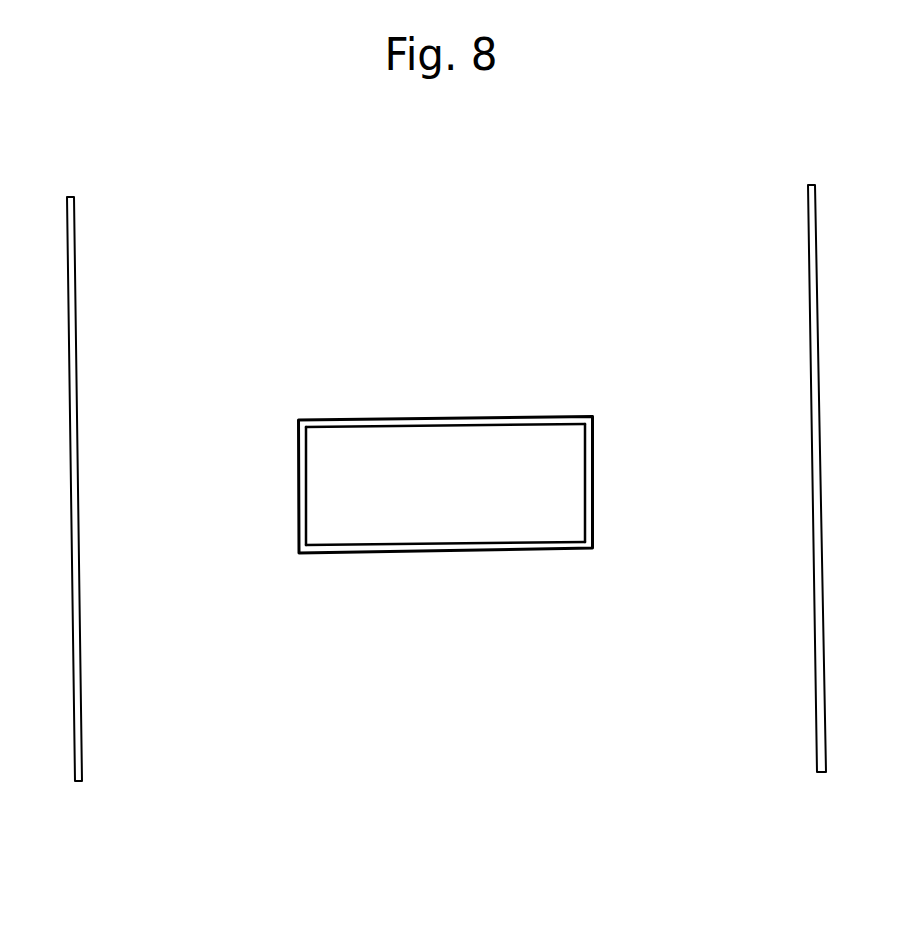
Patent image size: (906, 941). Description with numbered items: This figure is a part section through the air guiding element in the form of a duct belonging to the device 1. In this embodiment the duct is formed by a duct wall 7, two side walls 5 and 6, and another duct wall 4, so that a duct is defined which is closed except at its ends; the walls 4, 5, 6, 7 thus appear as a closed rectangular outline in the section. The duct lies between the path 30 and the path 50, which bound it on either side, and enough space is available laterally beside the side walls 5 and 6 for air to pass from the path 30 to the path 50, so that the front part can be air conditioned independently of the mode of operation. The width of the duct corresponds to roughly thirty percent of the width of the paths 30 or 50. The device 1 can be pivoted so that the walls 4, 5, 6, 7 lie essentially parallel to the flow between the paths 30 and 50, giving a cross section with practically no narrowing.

The device 1 is at (553, 298).
The duct wall 4 is at (456, 417).
The side wall 5 is at (589, 502).
The side wall 6 is at (309, 504).
The duct wall 7 is at (434, 553).
The path 50 is at (452, 231).
The path 30 is at (459, 762).